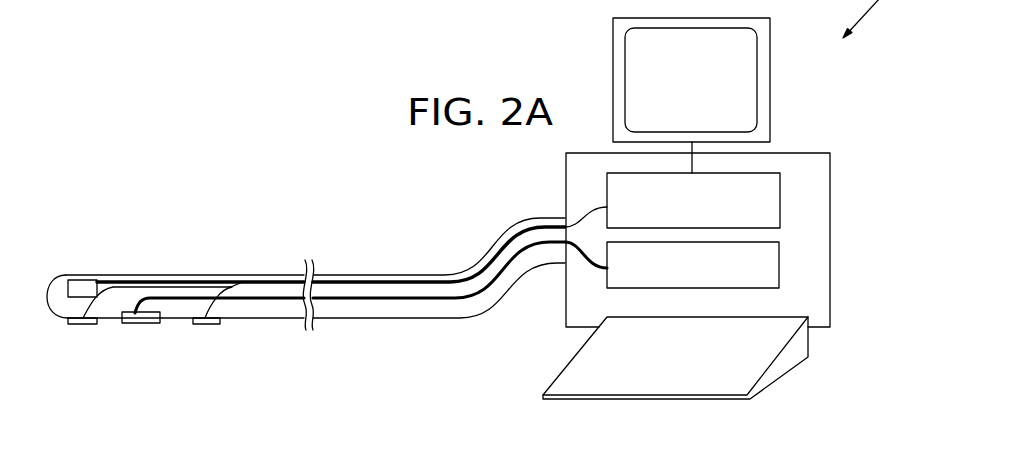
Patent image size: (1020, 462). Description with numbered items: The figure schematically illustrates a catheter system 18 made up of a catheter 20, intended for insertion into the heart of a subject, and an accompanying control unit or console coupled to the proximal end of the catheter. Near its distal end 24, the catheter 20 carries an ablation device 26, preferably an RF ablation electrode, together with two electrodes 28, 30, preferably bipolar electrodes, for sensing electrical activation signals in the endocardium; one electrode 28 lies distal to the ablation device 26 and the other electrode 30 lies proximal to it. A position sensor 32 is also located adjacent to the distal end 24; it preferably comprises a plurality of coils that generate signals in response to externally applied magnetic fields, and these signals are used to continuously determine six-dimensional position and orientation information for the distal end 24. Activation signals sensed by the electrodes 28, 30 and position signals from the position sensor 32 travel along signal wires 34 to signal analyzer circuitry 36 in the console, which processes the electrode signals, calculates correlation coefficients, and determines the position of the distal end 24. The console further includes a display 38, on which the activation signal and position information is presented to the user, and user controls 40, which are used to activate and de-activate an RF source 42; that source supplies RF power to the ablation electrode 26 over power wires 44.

The catheter system 18 is at (288, 136).
The catheter 20 is at (262, 273).
The distal end 24 is at (50, 293).
The ablation device 26 is at (131, 324).
The electrode 28 is at (72, 325).
The electrode 30 is at (213, 325).
The position sensor 32 is at (84, 286).
The signal wires 34 is at (373, 280).
The signal analyzer circuitry 36 is at (778, 193).
The display 38 is at (765, 38).
The user controls 40 is at (797, 362).
The RF source 42 is at (773, 259).
The power wires 44 is at (420, 299).